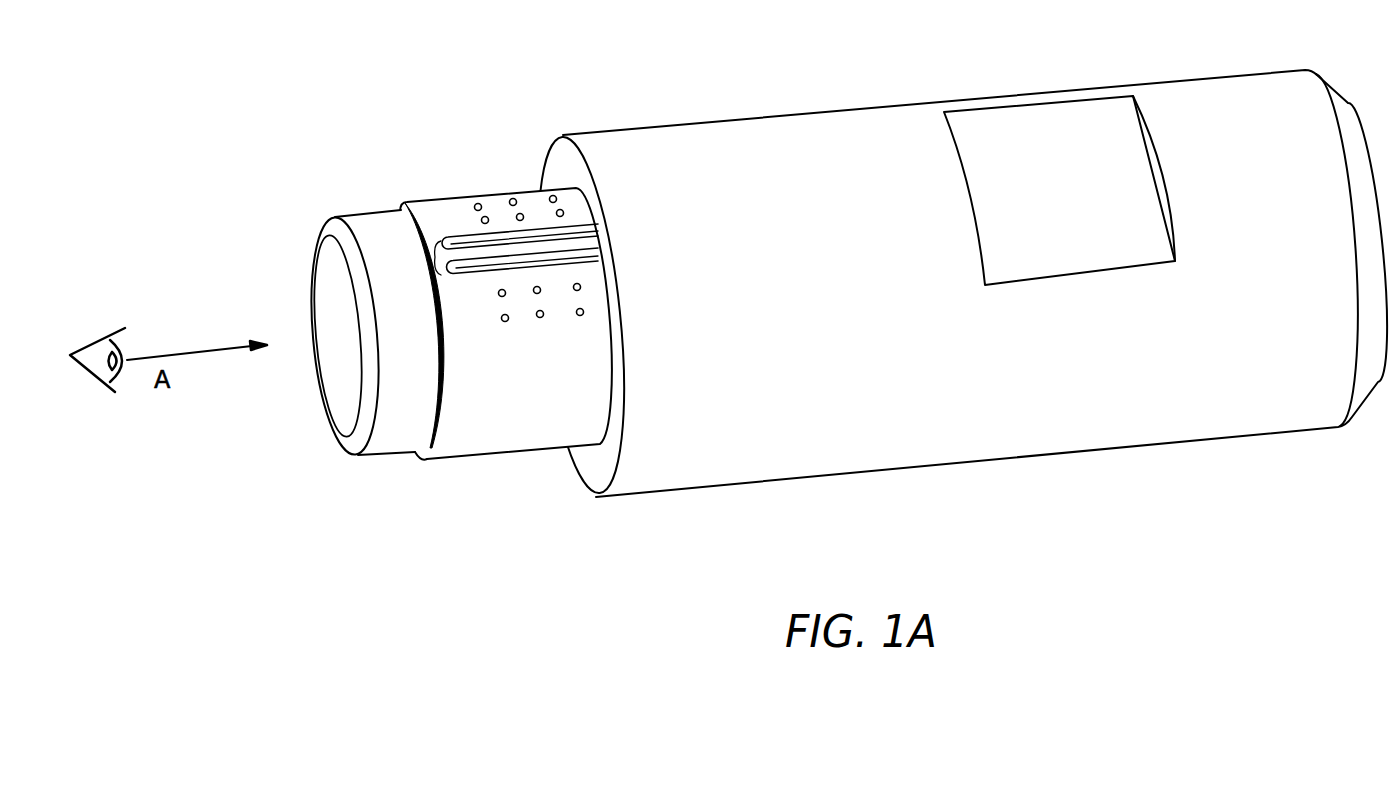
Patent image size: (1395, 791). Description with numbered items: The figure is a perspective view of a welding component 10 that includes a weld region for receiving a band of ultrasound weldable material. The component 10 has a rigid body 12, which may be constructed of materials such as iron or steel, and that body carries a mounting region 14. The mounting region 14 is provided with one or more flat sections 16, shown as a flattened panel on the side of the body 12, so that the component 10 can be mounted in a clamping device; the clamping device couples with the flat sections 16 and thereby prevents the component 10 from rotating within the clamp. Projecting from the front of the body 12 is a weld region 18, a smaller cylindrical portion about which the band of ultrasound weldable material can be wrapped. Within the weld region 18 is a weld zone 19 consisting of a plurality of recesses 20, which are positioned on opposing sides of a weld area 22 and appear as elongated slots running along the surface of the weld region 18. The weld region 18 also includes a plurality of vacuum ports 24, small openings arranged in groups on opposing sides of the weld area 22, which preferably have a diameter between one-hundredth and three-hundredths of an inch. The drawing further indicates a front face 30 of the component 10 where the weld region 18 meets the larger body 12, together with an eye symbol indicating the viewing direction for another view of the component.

The welding component 10 is at (732, 107).
The rigid body 12 is at (363, 213).
The mounting region 14 is at (1160, 157).
The flat sections 16 is at (1055, 142).
The weld region 18 is at (517, 327).
The weld zone 19 is at (434, 259).
The recesses 20 is at (487, 270).
The weld area 22 is at (578, 241).
The vacuum ports 24 is at (551, 196).
The front face 30 is at (563, 163).